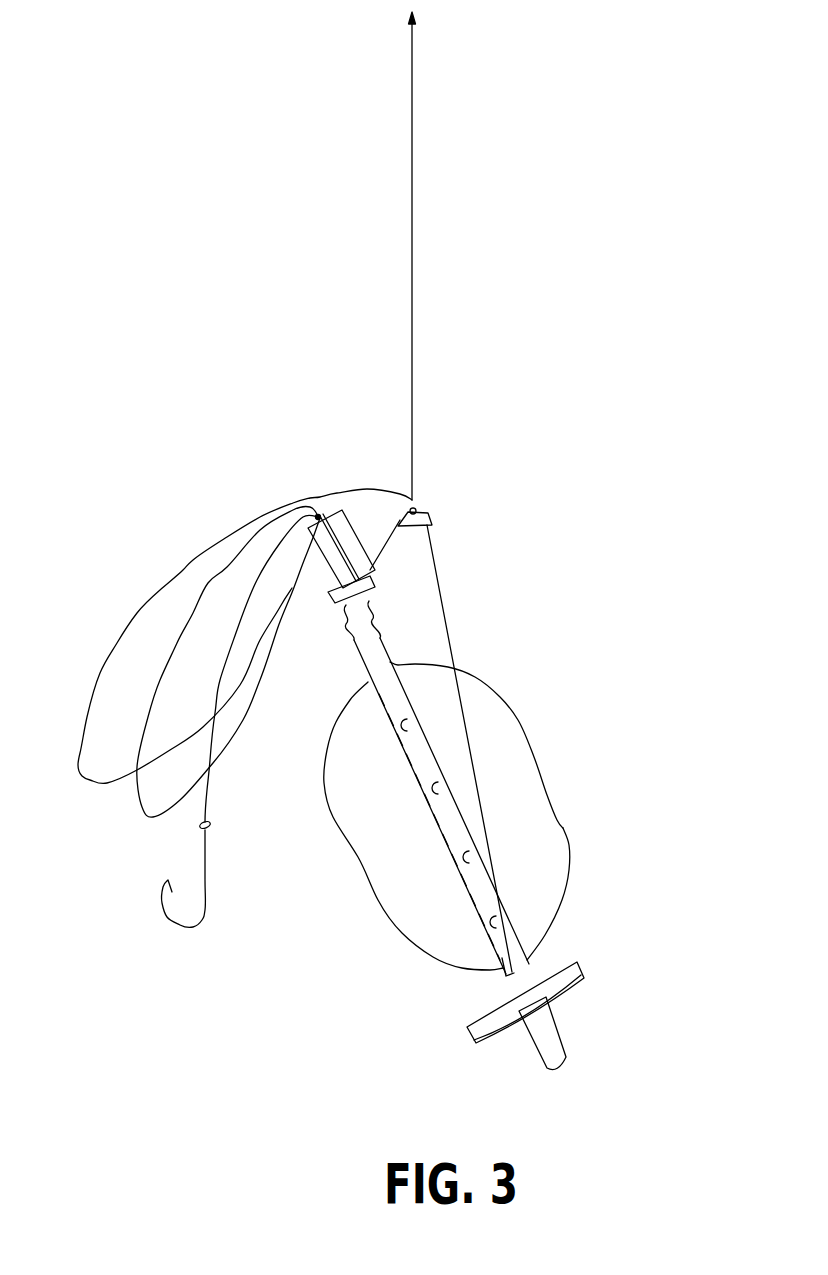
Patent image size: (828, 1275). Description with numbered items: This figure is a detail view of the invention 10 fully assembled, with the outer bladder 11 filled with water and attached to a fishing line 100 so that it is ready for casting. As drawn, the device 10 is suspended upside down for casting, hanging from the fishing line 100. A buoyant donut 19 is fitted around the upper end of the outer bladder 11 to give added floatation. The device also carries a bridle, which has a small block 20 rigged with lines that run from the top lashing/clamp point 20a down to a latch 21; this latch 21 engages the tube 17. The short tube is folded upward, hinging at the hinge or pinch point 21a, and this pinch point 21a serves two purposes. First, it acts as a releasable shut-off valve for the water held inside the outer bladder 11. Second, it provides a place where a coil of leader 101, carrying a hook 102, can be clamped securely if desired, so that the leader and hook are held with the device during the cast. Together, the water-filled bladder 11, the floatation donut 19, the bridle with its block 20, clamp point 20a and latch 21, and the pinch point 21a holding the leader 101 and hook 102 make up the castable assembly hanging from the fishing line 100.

The fishing line 100 is at (415, 245).
The coil of leader 101 is at (125, 632).
The hook 102 is at (190, 913).
The invention 10 is at (530, 712).
The outer bladder 11 is at (563, 828).
The tube 17 is at (350, 548).
The buoyant donut 19 is at (582, 983).
The small block 20 is at (428, 515).
The top lashing/clamp point 20a is at (500, 993).
The latch 21 is at (343, 598).
The hinge (pinch point) 21a is at (320, 515).